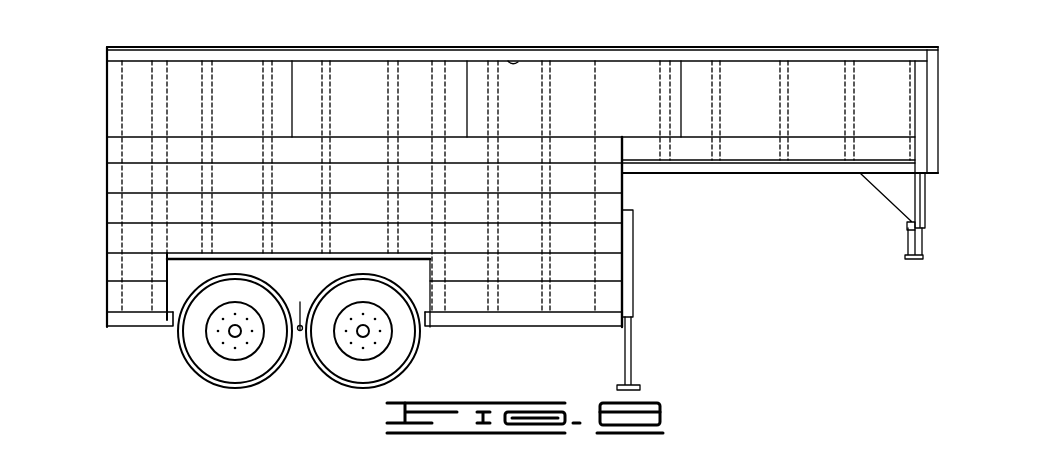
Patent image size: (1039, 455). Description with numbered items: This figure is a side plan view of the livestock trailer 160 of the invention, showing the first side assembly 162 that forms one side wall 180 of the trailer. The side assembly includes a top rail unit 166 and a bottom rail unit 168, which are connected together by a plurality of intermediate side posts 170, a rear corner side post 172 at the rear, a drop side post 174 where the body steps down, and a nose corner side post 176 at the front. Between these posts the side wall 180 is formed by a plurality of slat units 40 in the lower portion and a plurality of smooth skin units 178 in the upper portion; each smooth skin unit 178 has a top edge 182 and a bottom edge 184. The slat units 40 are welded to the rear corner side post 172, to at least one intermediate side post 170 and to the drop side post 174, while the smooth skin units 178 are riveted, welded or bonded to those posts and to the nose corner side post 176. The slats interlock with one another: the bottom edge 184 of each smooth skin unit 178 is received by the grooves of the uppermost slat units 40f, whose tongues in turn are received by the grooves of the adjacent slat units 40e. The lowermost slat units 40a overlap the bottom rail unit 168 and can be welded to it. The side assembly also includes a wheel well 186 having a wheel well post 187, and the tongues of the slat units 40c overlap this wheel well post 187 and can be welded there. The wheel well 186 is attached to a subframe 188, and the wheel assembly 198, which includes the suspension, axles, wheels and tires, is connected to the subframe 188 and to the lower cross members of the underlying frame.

The trailer 160 is at (953, 53).
The top rail unit 166 is at (560, 52).
The intermediate side posts 170 is at (158, 65).
The top edge 182 is at (508, 58).
The rear corner side post 172 is at (113, 96).
The smooth skin units 178 is at (249, 108).
The uppermost slat units 40f is at (133, 152).
The first side assembly 162 is at (133, 172).
The bottom edge 184 is at (900, 137).
The side wall 180 is at (147, 205).
The slat units adjacent to uppermost slat units 40e is at (112, 182).
The slat units at wheel well 40c is at (132, 240).
The wheel well post 187 is at (173, 257).
The subframe 188 is at (427, 323).
The lowermost slat units 40a is at (130, 302).
The bottom rail unit 168 is at (132, 325).
The slat units 40 is at (605, 185).
The drop side post 174 is at (635, 218).
The nose corner side post 176 is at (930, 81).
The wheel assembly 198 is at (208, 375).
The wheel well 186 is at (299, 335).